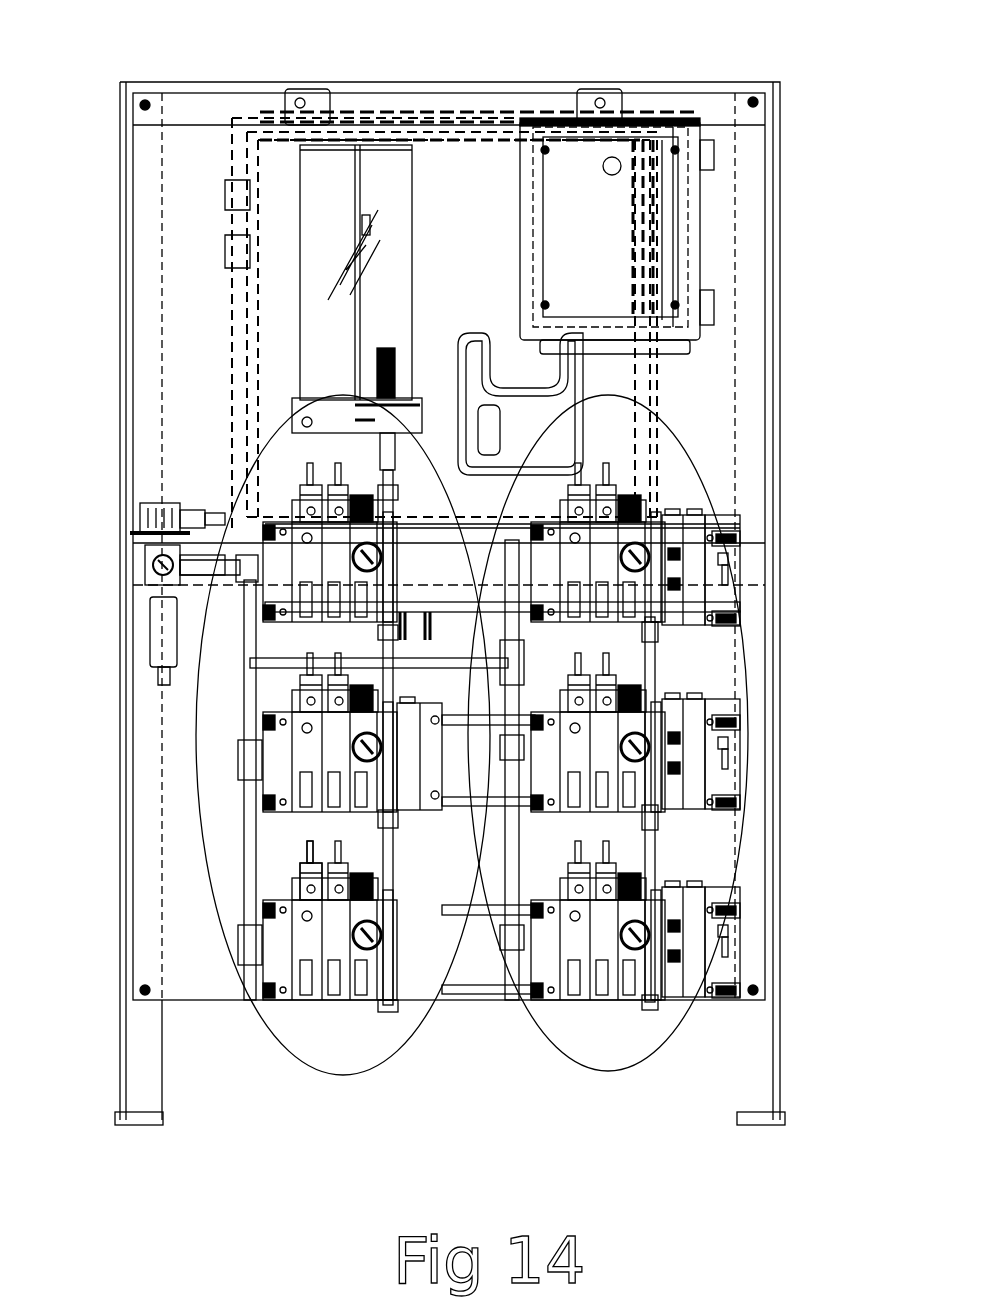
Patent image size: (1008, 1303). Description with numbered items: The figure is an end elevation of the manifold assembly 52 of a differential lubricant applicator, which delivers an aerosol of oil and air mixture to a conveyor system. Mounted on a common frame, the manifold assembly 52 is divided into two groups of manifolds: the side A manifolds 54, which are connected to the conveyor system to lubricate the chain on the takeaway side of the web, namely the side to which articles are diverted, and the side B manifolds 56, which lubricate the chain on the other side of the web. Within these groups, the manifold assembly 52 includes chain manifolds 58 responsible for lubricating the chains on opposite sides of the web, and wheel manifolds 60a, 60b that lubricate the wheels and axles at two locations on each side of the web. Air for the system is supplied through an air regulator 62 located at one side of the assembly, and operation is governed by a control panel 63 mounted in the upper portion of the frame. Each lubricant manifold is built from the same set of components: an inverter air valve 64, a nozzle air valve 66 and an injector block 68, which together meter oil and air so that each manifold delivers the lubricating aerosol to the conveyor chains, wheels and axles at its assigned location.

The manifold assembly 52 is at (556, 84).
The control panel 63 is at (705, 240).
The chain manifolds 58 is at (738, 514).
The air regulator 62 is at (140, 521).
The wheel manifold 60a is at (710, 691).
The wheel manifold 60b is at (710, 888).
The nozzle air valve 66 is at (308, 850).
The inverter air valve 64 is at (300, 870).
The injector block 68 is at (430, 1010).
The side A manifolds 54 is at (330, 1075).
The side B manifolds 56 is at (625, 1072).